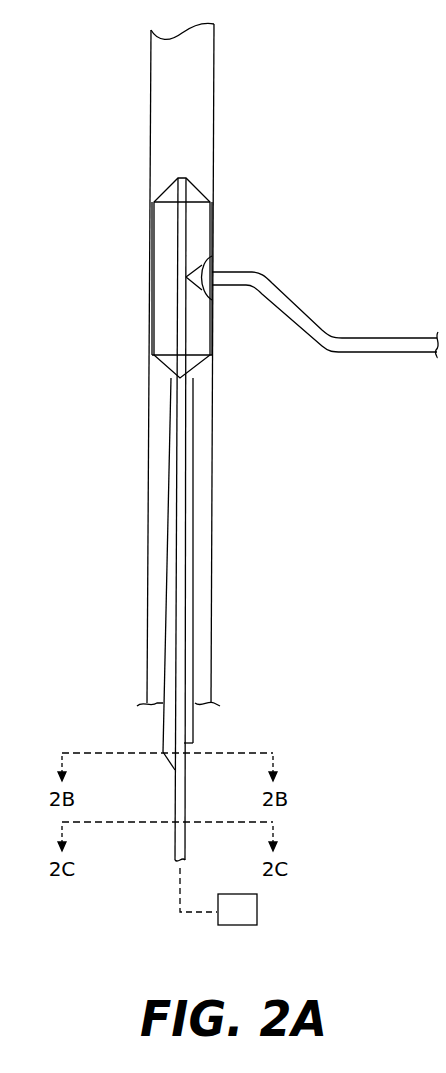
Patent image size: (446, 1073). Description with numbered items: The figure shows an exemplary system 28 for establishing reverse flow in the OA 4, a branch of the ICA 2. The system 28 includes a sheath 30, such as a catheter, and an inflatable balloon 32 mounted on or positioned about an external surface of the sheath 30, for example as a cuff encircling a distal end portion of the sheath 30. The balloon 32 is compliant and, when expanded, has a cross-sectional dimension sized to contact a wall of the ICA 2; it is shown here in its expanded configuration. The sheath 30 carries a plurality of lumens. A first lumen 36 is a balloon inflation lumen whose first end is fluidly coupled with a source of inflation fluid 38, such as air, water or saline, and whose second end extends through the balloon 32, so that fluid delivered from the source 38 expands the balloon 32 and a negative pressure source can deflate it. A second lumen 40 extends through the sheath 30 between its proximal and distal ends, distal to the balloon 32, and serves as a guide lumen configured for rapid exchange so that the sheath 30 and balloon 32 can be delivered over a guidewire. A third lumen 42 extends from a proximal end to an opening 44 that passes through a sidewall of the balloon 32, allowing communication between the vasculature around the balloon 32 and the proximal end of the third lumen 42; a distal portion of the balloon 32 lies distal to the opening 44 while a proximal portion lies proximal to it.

The ICA 2 is at (214, 57).
The system 28 is at (303, 100).
The inflatable balloon 32 is at (137, 265).
The opening 44 is at (203, 270).
The OA 4 is at (318, 306).
The sheath 30 is at (196, 548).
The third lumen 42 is at (196, 727).
The second lumen 40 is at (166, 766).
The first lumen 36 is at (187, 793).
The source of inflation fluid 38 is at (218, 896).